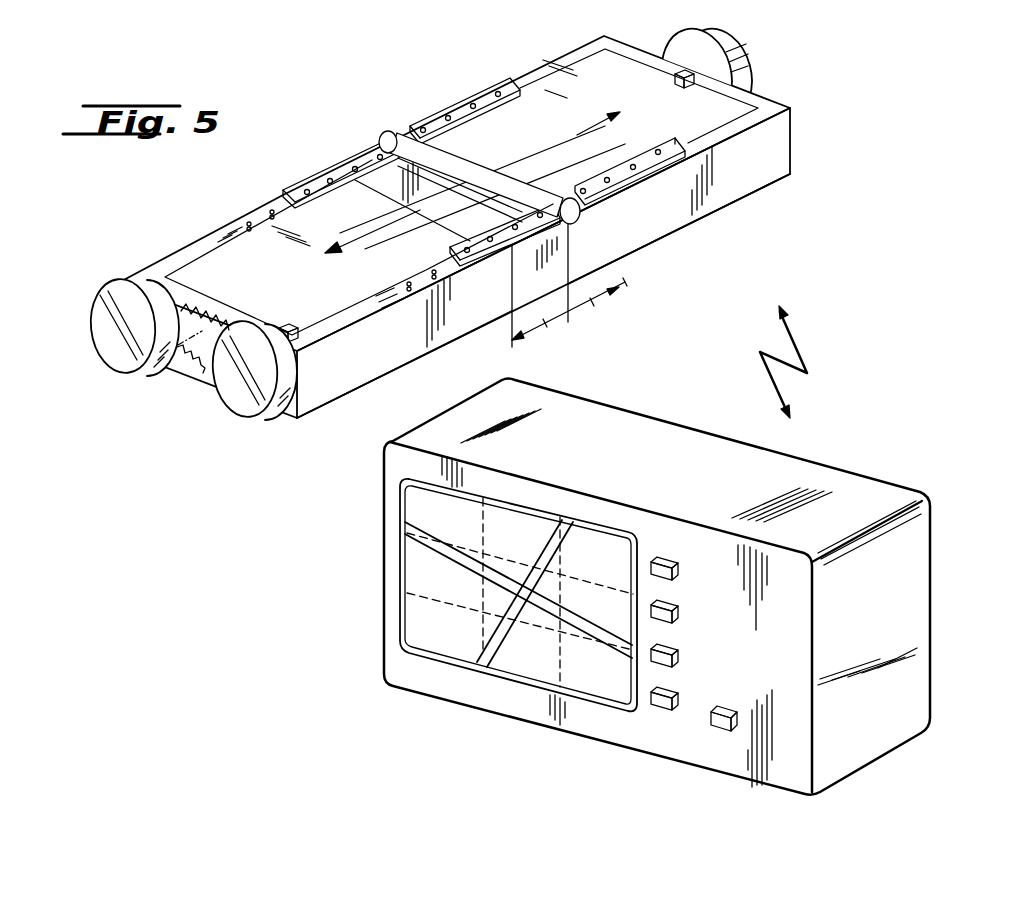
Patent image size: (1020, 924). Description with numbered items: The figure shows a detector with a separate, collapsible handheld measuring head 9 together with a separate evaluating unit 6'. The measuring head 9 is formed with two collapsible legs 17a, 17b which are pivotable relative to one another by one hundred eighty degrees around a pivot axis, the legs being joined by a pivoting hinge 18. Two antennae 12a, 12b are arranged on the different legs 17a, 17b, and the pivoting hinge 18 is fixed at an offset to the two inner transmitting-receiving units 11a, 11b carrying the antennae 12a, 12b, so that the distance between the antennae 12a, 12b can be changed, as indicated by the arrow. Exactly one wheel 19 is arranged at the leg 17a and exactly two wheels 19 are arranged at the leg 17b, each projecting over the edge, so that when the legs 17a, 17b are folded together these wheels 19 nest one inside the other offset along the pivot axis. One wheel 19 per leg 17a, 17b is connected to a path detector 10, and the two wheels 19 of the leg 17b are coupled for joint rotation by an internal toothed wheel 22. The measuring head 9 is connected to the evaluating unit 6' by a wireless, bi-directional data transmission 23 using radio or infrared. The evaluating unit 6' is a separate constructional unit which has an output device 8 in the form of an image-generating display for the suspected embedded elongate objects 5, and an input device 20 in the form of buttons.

The suspected embedded elongate objects 5 is at (500, 633).
The evaluating unit 6' is at (657, 587).
The output device 8 is at (619, 570).
The handheld measuring head 9 is at (340, 130).
The path detector 10 is at (292, 325).
The inner transmitting-receiving unit 11a is at (731, 216).
The inner transmitting-receiving unit 11b is at (342, 418).
The antenna 12a is at (641, 96).
The antenna 12b is at (264, 291).
The leg 17a is at (651, 236).
The leg 17b is at (356, 379).
The pivoting hinge 18 is at (393, 133).
The wheel 19 is at (739, 46).
The input device 20 is at (723, 718).
The internal toothed wheel 22 is at (193, 380).
The wireless bi-directional data transmission 23 is at (800, 348).